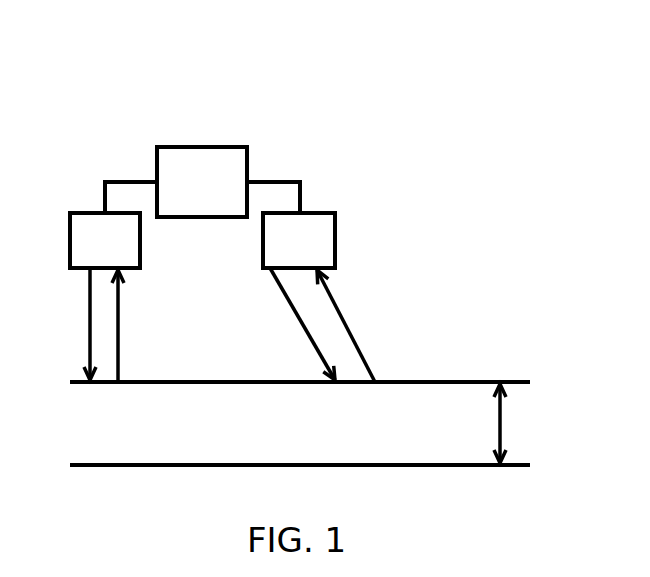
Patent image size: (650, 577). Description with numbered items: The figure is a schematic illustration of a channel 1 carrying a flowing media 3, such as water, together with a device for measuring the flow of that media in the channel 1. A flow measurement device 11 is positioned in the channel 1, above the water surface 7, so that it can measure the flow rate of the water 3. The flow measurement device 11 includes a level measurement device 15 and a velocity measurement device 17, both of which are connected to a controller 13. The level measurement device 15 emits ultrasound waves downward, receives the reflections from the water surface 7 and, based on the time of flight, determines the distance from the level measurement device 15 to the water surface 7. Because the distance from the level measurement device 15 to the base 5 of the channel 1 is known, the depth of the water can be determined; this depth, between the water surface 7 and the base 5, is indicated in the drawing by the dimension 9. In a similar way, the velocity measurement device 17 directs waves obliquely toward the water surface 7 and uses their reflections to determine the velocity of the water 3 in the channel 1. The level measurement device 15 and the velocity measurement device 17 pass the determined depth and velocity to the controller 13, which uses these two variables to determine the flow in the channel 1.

The channel 1 is at (495, 307).
The flowing media 3 is at (403, 417).
The base 5 is at (140, 465).
The water surface 7 is at (472, 380).
The layer thickness 9 is at (500, 428).
The flow measurement device 11 is at (178, 83).
The controller 13 is at (215, 147).
The level measurement device 15 is at (85, 213).
The velocity measurement device 17 is at (320, 213).